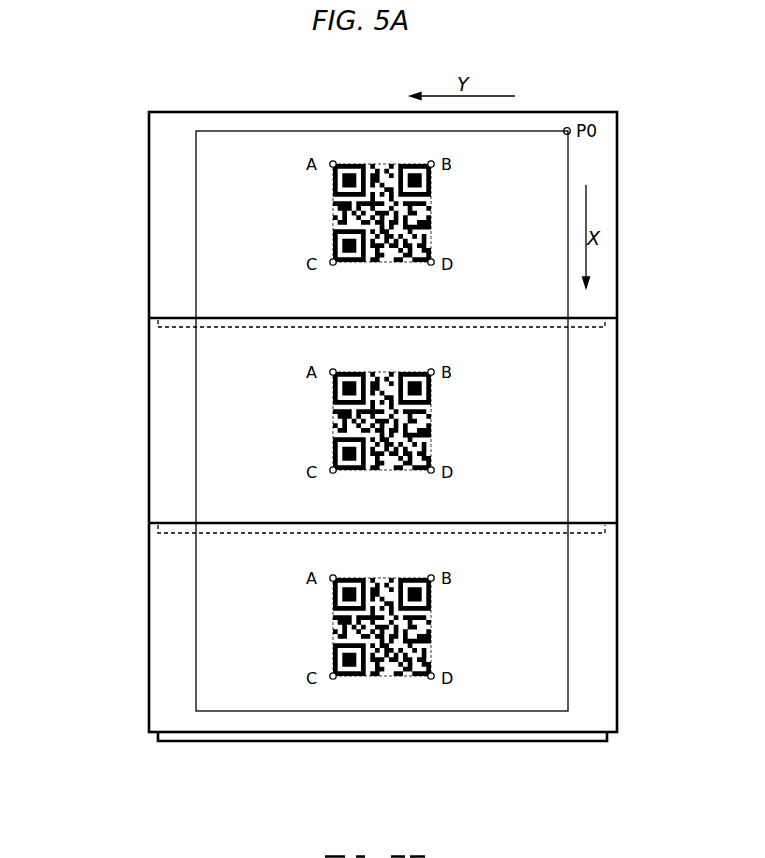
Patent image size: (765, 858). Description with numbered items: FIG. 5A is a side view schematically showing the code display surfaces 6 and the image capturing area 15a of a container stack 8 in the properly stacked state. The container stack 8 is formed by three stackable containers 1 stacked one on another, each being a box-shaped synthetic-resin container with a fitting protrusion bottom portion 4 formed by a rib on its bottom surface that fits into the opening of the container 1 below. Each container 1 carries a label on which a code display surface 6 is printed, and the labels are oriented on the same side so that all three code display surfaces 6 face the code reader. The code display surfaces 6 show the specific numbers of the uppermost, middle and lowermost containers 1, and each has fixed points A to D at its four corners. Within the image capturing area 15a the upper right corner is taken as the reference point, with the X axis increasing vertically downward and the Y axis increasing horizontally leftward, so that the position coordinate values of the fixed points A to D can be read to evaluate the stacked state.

The stackable container 1 is at (163, 235).
The fitting protrusion bottom portion 4 is at (588, 327).
The code display surface 6 is at (333, 219).
The container stack 8 is at (149, 374).
The image capturing area 15a is at (568, 437).